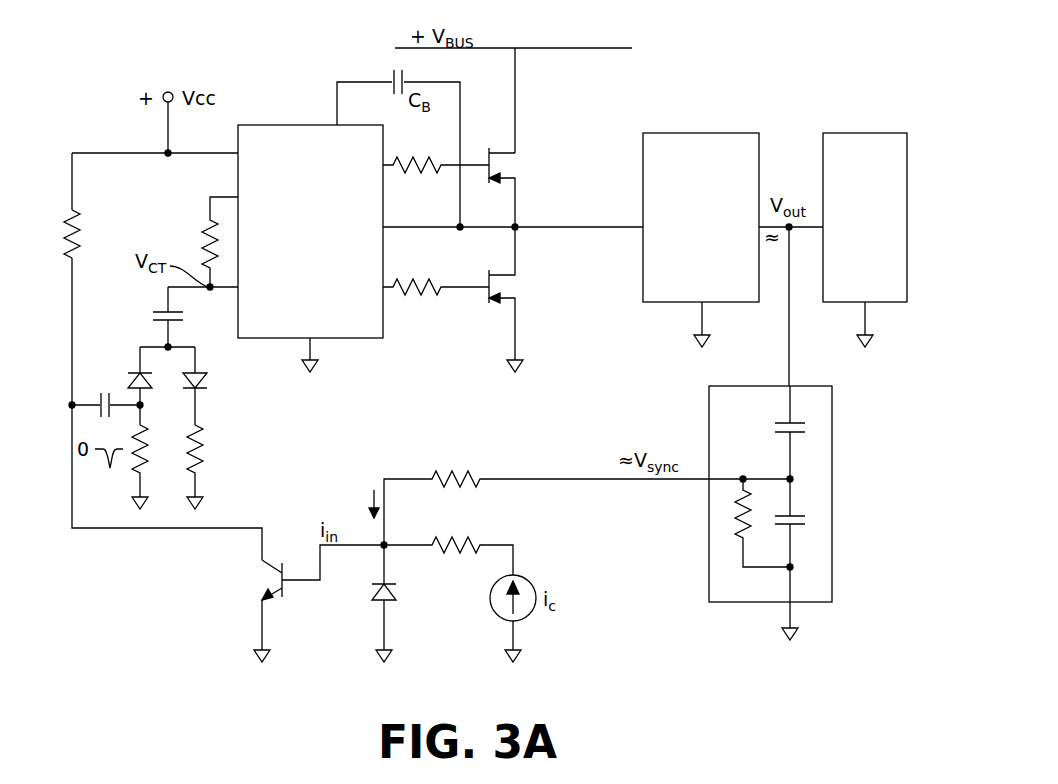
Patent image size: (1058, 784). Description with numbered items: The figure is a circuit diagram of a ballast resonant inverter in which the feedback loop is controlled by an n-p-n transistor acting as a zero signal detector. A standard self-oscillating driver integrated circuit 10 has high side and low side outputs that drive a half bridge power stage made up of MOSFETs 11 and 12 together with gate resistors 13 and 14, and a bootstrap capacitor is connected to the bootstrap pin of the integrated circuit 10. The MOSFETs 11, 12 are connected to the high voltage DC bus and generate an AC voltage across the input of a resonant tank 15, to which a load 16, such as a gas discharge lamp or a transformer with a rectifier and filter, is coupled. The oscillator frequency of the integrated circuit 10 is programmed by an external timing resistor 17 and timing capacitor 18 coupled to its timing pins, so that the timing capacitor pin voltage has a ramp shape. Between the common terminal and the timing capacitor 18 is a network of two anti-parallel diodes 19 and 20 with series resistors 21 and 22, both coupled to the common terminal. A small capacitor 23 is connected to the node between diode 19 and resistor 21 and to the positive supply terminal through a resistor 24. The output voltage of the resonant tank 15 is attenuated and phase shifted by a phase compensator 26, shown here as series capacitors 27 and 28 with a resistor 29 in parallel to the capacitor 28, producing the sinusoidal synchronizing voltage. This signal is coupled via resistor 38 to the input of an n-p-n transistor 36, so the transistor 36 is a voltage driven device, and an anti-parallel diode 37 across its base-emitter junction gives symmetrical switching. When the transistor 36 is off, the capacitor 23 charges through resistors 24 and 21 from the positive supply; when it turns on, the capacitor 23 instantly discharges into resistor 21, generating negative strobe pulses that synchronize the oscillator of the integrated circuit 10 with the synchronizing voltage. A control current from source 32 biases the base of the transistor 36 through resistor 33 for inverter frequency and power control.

The self-oscillating driver integrated circuit 10 is at (313, 230).
The MOSFET 11 is at (497, 177).
The MOSFET 12 is at (497, 298).
The gate resistor 13 is at (420, 170).
The gate resistor 14 is at (420, 292).
The resonant tank 15 is at (700, 133).
The load 16 is at (863, 133).
The timing resistor 17 is at (203, 242).
The timing capacitor 18 is at (154, 316).
The diode 19 is at (134, 380).
The diode 20 is at (206, 382).
The resistor 21 is at (138, 470).
The resistor 22 is at (206, 450).
The capacitor 23 is at (100, 398).
The resistor 24 is at (86, 233).
The phase compensator 26 is at (832, 412).
The capacitor 27 is at (775, 430).
The capacitor 28 is at (806, 520).
The resistor 29 is at (742, 545).
The current source 32 is at (494, 612).
The resistor 33 is at (452, 538).
The n-p-n transistor 36 is at (283, 590).
The anti-parallel diode 37 is at (398, 590).
The resistor 38 is at (450, 471).